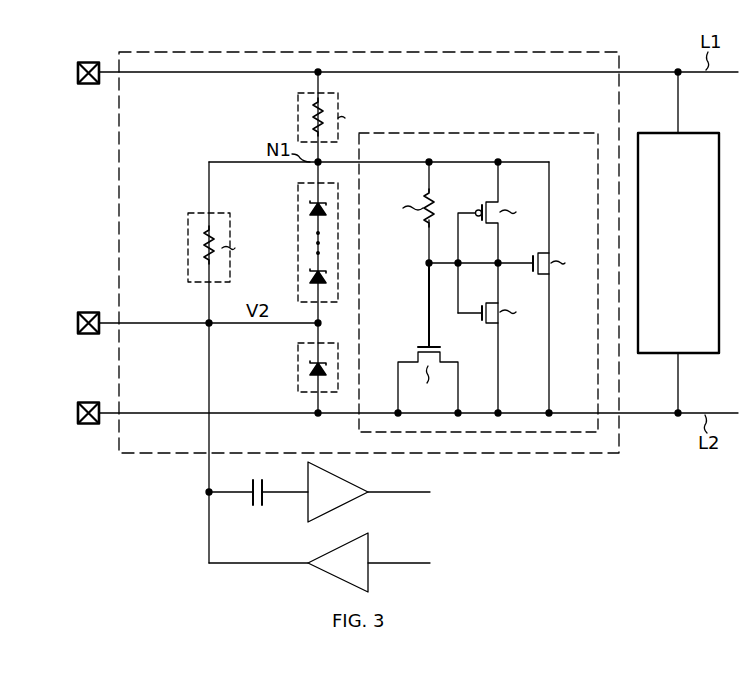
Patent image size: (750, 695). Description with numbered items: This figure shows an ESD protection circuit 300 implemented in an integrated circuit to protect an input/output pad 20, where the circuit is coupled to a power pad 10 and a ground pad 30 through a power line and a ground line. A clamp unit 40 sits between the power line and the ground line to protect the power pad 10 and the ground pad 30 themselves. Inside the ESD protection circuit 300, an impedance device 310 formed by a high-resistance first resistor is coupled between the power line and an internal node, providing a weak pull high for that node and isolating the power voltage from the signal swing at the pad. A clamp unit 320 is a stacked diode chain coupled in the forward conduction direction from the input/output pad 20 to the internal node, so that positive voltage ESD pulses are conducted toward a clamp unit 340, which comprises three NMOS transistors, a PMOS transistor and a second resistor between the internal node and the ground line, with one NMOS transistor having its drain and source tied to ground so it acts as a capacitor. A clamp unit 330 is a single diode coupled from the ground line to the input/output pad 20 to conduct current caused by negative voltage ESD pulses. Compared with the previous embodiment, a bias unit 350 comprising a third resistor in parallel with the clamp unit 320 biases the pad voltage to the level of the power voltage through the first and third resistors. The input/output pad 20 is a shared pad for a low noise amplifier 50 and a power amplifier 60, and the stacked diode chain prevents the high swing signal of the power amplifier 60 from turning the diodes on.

The power pad 10 is at (89, 60).
The input/output (I/O) pad 20 is at (89, 311).
The ground pad 30 is at (89, 401).
The clamp unit 40 is at (692, 276).
The low noise amplifier (LNA) 50 is at (341, 474).
The power amplifier (PA) 60 is at (335, 545).
The ESD protection circuit 300 is at (367, 51).
The impedance device 310 is at (298, 120).
The clamp unit 320 is at (298, 213).
The clamp unit 330 is at (298, 370).
The clamp unit 340 is at (475, 132).
The bias unit 350 is at (188, 246).